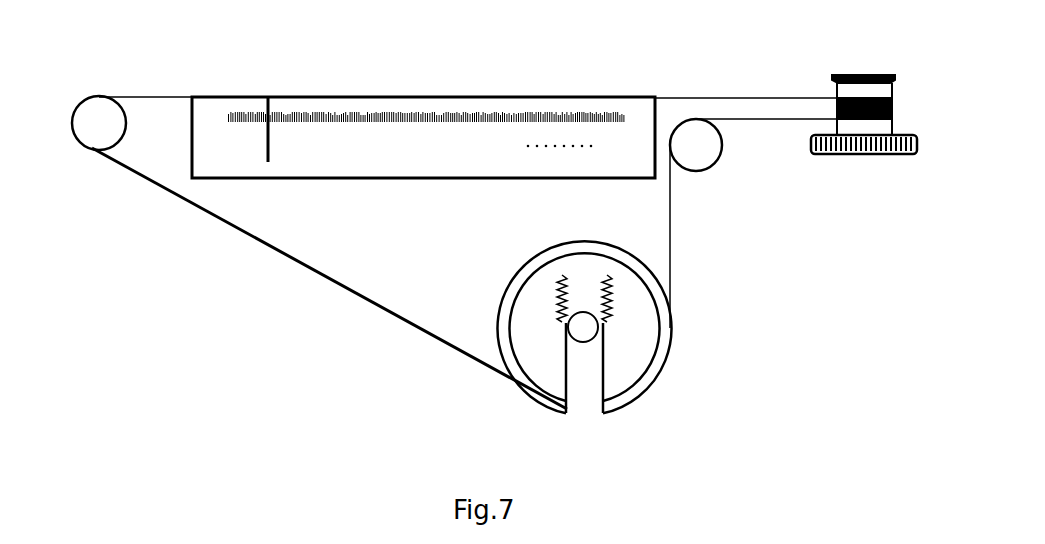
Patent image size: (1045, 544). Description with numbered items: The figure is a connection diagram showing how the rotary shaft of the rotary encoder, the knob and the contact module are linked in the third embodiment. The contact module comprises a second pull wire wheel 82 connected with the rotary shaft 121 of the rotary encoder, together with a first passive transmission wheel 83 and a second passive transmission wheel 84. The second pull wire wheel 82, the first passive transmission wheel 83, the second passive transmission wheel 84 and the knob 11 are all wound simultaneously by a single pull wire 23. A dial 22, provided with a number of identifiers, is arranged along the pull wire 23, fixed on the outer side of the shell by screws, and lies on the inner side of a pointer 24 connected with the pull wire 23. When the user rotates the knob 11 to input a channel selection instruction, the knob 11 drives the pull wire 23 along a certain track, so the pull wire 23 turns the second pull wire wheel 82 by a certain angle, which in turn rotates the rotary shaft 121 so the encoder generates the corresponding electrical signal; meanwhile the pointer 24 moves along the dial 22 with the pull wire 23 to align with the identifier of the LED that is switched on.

The knob 11 is at (855, 128).
The dial 22 is at (328, 170).
The pull wire 23 is at (150, 97).
The pointer 24 is at (267, 150).
The second pull wire wheel 82 is at (632, 352).
The first passive transmission wheel 83 is at (97, 118).
The second passive transmission wheel 84 is at (703, 155).
The rotary shaft 121 is at (582, 333).